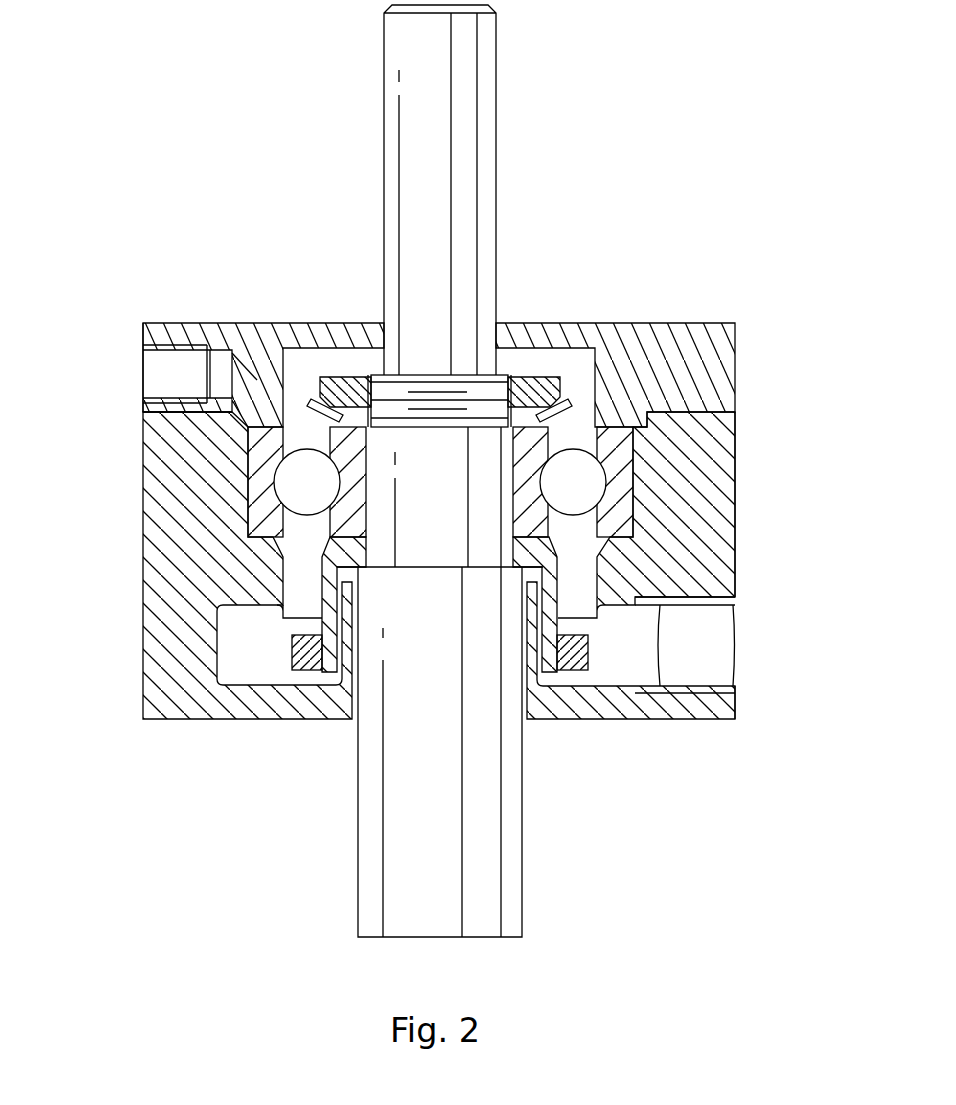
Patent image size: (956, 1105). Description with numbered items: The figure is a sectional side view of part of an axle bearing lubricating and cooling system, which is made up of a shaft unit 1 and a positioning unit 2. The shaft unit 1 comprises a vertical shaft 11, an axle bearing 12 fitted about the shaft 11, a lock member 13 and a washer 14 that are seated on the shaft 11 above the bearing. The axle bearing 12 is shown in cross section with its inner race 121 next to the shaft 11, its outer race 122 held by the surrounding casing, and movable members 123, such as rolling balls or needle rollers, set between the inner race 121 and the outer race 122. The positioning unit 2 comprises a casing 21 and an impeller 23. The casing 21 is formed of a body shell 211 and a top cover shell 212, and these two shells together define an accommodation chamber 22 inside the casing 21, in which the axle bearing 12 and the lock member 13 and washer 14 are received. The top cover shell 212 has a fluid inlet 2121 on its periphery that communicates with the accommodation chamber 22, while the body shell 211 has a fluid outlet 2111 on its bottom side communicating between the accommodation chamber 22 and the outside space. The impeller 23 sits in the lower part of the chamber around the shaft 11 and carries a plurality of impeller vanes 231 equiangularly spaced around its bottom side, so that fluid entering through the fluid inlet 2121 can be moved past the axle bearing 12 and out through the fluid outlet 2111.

The shaft unit 1 is at (435, 471).
The shaft 11 is at (398, 215).
The positioning unit 2 is at (448, 496).
The casing 21 is at (491, 565).
The body shell 211 is at (730, 512).
The fluid outlet 2111 is at (733, 645).
The top cover shell 212 is at (144, 332).
The fluid inlet 2121 is at (157, 380).
The accommodation chamber 22 is at (396, 335).
The impeller 23 is at (332, 639).
The impeller vanes 231 is at (308, 660).
The axle bearing 12 is at (451, 474).
The inner race 121 is at (522, 513).
The outer race 122 is at (627, 455).
The movable members 123 is at (590, 493).
The lock member 13 is at (532, 380).
The washer 14 is at (565, 408).